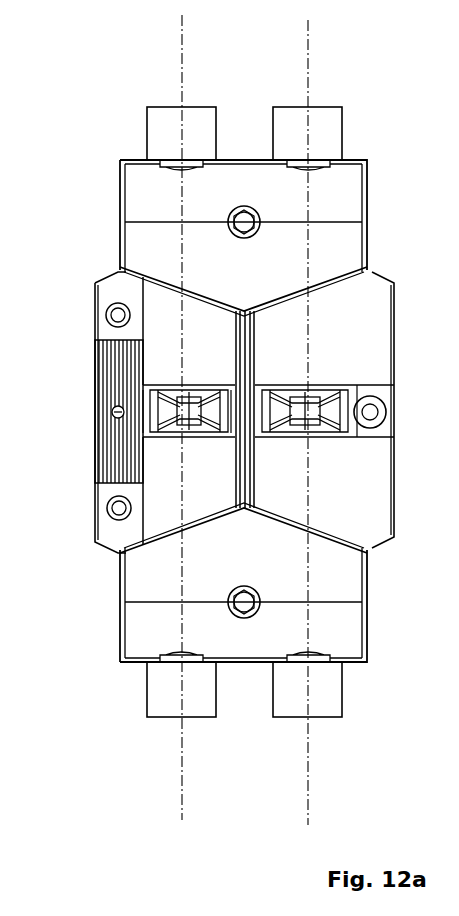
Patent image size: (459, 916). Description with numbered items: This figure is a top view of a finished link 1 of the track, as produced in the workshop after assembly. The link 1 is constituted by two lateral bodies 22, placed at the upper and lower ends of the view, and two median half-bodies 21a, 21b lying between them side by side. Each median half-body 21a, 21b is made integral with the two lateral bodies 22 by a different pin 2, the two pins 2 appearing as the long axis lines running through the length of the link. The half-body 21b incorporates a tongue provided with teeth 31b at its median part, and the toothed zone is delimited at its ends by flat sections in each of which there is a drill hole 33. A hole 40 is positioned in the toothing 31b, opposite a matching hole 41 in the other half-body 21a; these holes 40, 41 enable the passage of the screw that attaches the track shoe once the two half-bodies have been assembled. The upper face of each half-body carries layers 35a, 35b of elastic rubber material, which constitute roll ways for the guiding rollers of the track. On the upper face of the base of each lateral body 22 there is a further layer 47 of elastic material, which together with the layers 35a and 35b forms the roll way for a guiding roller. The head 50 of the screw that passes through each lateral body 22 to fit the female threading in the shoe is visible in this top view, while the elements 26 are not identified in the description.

The link 1 is at (104, 724).
The pin 2 is at (182, 57).
The half-body 21a is at (381, 326).
The half-body 21b is at (103, 289).
The lateral body 22 is at (135, 187).
The connector 26 is at (305, 112).
The teeth 31b is at (95, 387).
The drill hole 33 is at (115, 517).
The layer of elastic material 35a is at (309, 410).
The layer of elastic material 35b is at (187, 410).
The hole 40 is at (112, 414).
The hole 41 is at (386, 413).
The layer of elastic material 47 is at (243, 413).
The screw head 50 is at (244, 212).